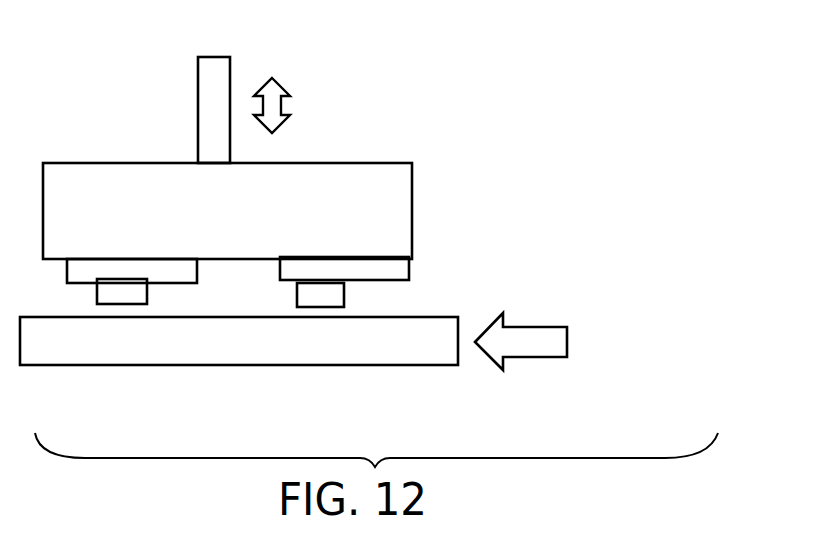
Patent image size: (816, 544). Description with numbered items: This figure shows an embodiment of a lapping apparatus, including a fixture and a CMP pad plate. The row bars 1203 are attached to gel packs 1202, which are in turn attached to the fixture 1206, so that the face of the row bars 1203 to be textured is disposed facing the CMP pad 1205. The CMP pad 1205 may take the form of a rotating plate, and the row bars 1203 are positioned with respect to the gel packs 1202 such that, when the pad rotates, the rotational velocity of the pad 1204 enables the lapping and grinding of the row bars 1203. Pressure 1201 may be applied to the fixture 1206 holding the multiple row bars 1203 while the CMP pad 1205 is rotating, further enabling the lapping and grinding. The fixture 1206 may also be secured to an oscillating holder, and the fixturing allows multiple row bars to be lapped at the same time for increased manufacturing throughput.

The pressure 1201 is at (399, 73).
The gel packs 1202 is at (403, 247).
The row bars 1203 is at (355, 298).
The rotational velocity of the pad 1204 is at (635, 354).
The CMP pad 1205 is at (256, 377).
The fixture 1206 is at (288, 212).